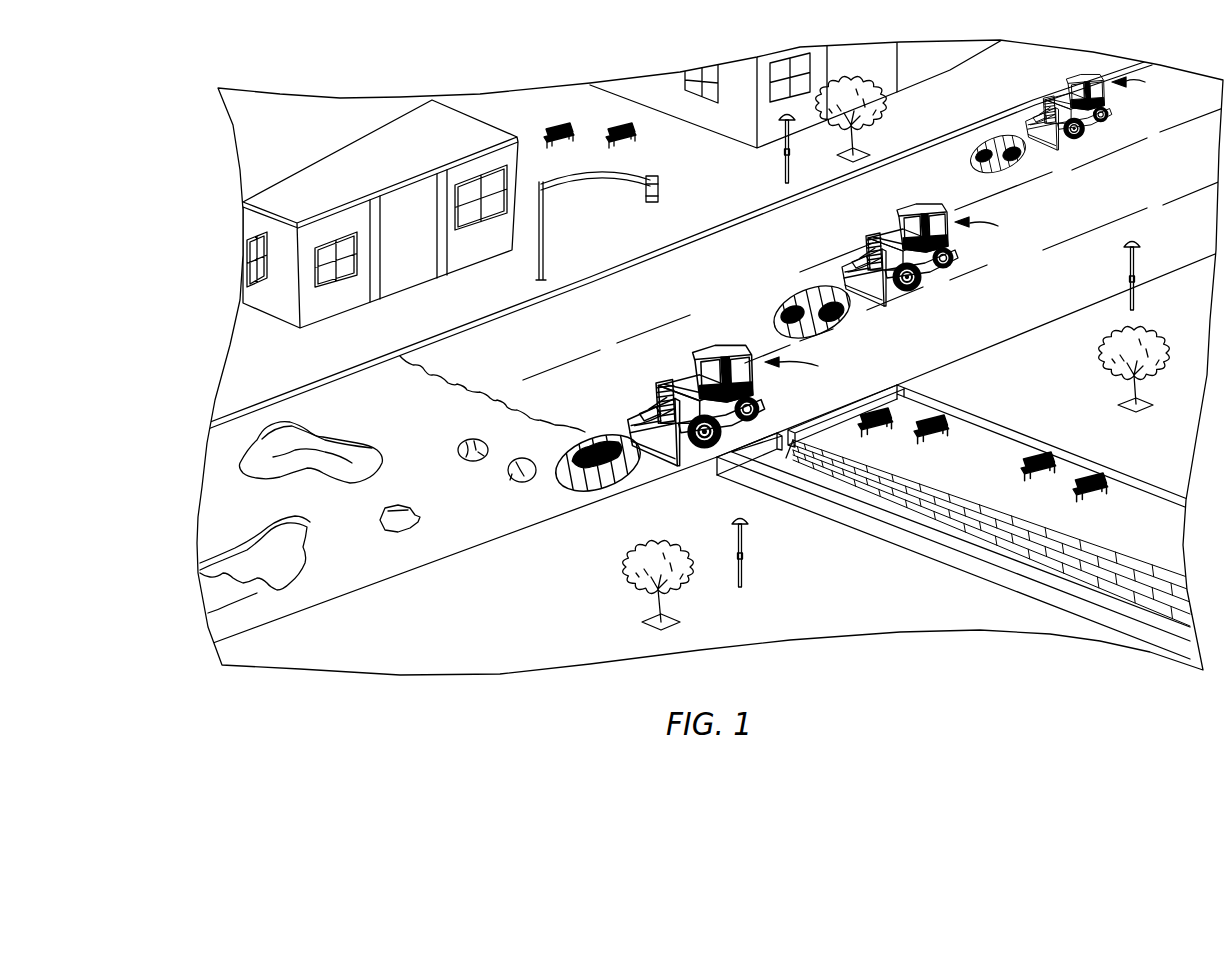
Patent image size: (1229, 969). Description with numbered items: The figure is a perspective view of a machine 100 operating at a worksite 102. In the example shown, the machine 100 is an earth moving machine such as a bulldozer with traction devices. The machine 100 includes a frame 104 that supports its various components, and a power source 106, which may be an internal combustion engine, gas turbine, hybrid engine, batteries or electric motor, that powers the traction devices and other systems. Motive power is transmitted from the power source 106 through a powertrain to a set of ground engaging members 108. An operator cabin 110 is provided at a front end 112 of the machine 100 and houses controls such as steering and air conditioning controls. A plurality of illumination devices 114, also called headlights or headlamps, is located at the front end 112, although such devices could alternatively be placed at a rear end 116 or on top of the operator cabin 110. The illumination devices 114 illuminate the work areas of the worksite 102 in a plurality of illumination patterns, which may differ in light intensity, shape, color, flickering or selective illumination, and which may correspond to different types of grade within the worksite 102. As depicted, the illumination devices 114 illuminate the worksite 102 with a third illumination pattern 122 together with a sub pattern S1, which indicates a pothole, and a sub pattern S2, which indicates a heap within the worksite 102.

The machine 100 is at (874, 261).
The worksite 102 is at (234, 74).
The frame 104 is at (876, 235).
The power source 106 is at (937, 240).
The set of ground engaging members 108 is at (949, 262).
The operator cabin 110 is at (925, 206).
The front end 112 is at (851, 246).
The plurality of illumination devices 114 is at (862, 242).
The rear end 116 is at (966, 224).
The third illumination pattern 122 is at (787, 293).
The sub pattern for a pothole S1 is at (793, 300).
The sub pattern for a heap S2 is at (833, 324).